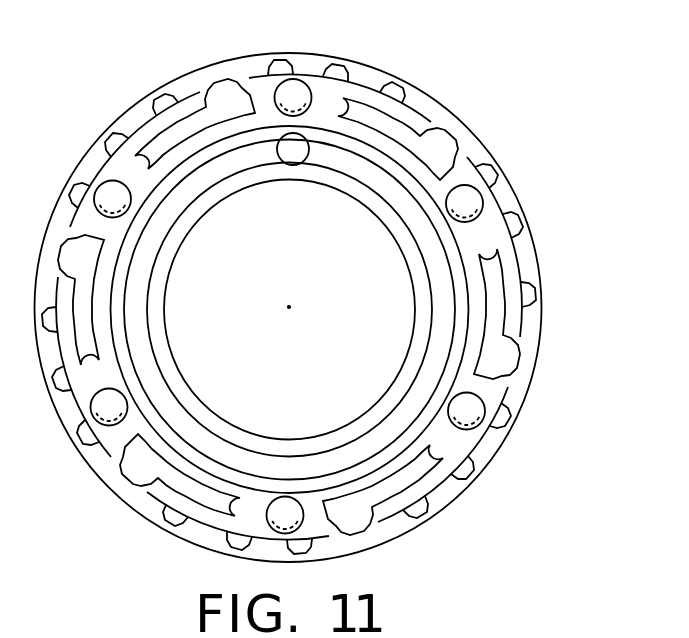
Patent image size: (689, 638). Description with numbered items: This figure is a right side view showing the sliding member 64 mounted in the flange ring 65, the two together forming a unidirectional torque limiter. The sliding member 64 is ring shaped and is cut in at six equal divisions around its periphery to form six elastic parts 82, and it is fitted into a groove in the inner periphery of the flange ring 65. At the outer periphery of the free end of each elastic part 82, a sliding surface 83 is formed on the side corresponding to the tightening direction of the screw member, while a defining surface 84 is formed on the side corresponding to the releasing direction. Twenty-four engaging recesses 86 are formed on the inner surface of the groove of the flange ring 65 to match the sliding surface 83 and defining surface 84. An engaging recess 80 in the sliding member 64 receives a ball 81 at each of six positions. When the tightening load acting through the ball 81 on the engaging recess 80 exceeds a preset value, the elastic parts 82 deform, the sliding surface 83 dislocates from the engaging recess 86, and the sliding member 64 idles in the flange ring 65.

The sliding member 64 is at (465, 172).
The flange ring 65 is at (525, 210).
The engaging recess 80 is at (463, 412).
The ball 81 is at (465, 202).
The elastic part 82 is at (408, 118).
The sliding surface 83 is at (473, 463).
The defining surface 84 is at (472, 462).
The engaging recess 86 is at (340, 67).